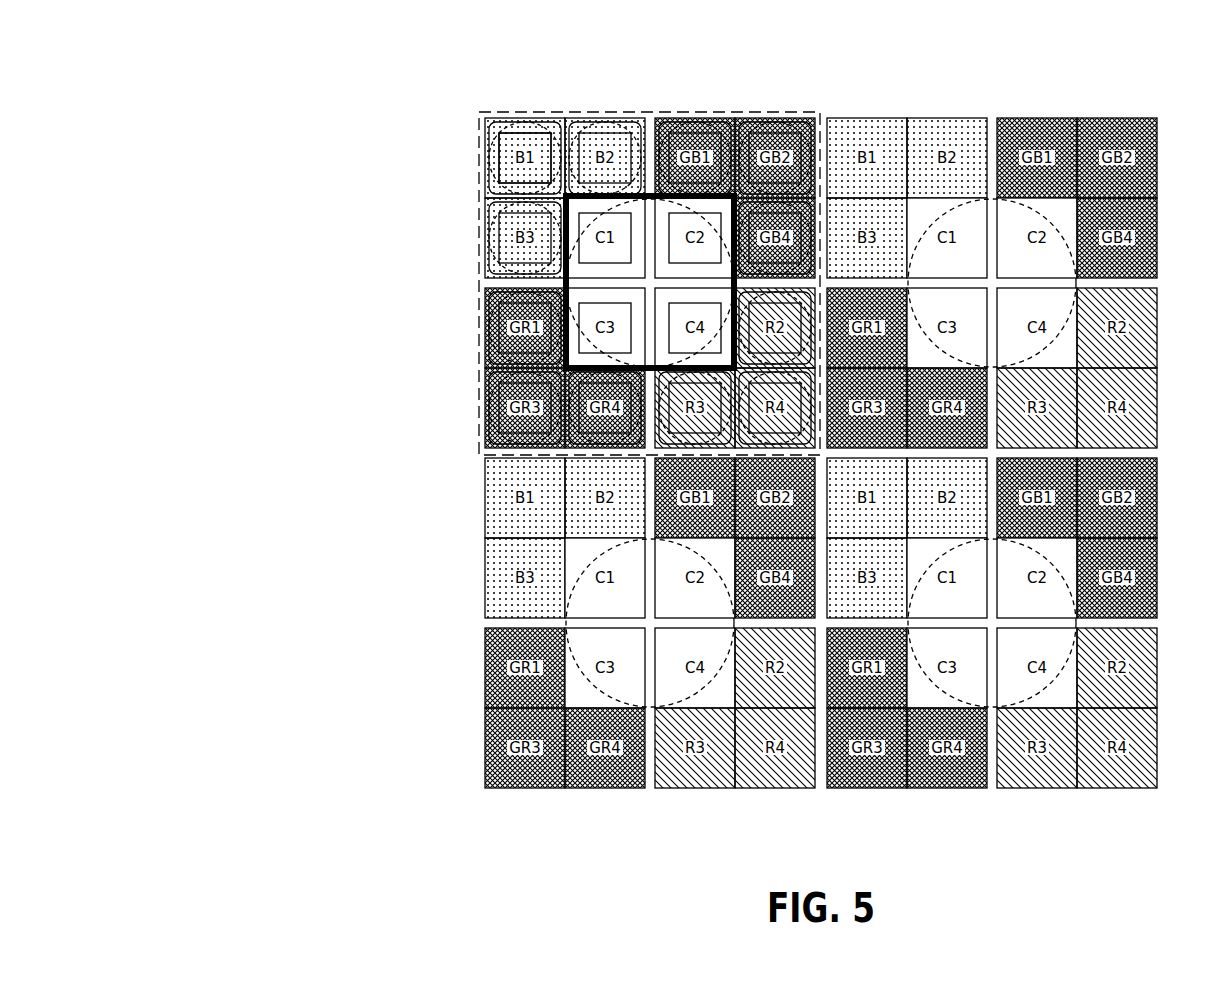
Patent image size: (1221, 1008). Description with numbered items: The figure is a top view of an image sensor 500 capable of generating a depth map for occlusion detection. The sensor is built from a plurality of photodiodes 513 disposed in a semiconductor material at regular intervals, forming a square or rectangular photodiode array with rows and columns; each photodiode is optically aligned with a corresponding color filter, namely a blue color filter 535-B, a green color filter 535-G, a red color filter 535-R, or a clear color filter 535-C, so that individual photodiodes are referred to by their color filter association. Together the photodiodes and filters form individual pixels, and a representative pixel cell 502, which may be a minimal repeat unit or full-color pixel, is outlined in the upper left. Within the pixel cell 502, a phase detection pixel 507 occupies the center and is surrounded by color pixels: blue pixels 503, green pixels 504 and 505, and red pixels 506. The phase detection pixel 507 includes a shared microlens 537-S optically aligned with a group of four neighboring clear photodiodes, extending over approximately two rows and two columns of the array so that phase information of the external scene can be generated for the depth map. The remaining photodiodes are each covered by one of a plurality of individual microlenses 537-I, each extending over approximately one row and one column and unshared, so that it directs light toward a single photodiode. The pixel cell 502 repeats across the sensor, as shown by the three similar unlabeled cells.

The image sensor 500 is at (222, 23).
The pixel cell 502 is at (486, 111).
The blue pixels 503 is at (565, 177).
The green pixels 504 is at (735, 177).
The green pixels 505 is at (536, 368).
The red pixels 506 is at (735, 382).
The phase detection pixel 507 is at (580, 282).
The photodiodes 513 is at (489, 158).
The blue color filter 535-B is at (931, 177).
The clear color filter 535-C is at (650, 283).
The green color filter 535-G is at (1077, 177).
The red color filter 535-R is at (1105, 353).
The individual microlenses 537-I is at (488, 158).
The shared microlens 537-S is at (574, 283).